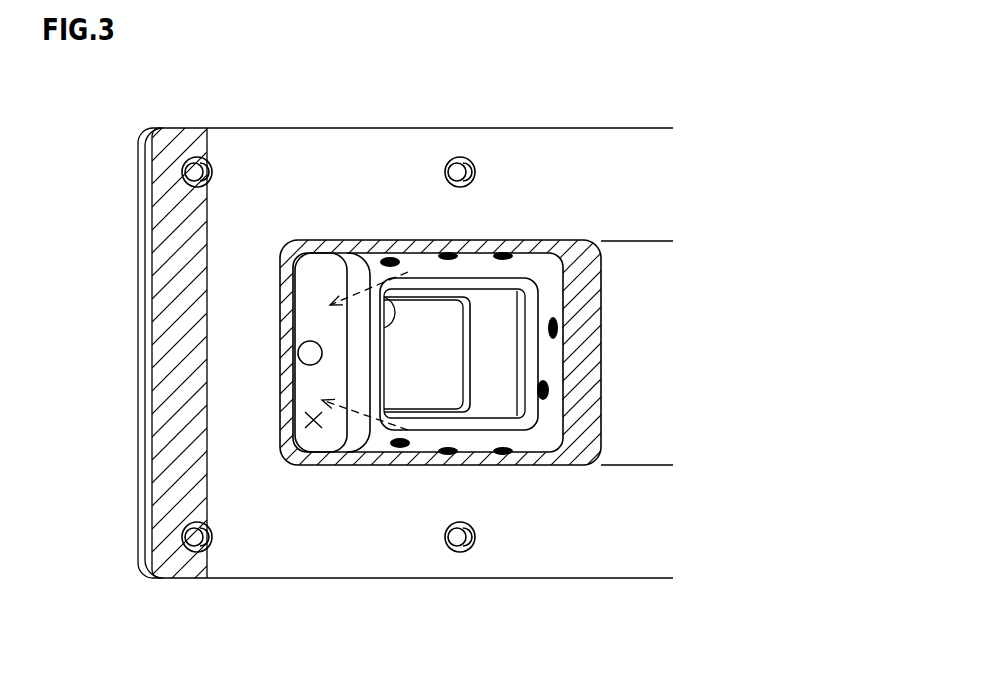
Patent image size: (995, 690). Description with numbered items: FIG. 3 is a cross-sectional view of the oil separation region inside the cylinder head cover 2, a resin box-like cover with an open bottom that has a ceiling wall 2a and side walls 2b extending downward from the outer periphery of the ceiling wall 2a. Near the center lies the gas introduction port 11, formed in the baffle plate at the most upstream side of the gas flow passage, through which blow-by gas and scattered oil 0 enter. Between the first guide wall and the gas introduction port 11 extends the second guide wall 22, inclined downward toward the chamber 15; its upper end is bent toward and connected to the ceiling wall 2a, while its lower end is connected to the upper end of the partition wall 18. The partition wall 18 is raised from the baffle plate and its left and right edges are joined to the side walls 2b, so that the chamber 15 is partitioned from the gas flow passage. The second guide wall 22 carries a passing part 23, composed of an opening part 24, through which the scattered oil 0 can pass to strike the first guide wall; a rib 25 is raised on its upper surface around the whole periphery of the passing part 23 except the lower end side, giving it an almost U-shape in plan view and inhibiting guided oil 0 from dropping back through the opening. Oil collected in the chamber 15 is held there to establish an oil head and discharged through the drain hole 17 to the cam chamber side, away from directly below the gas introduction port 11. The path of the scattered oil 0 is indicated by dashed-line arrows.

The cylinder head cover 2 is at (627, 238).
The ceiling wall 2a is at (650, 263).
The side wall 2b is at (492, 242).
The second guide wall 22 is at (538, 270).
The passing part 23 is at (372, 278).
The opening part 24 is at (315, 250).
The rib 25 is at (428, 287).
The gas introduction port 11 is at (439, 381).
The chamber 15 is at (313, 428).
The drain hole 17 is at (298, 345).
The partition wall 18 is at (358, 430).
The slot 0 is at (390, 257).